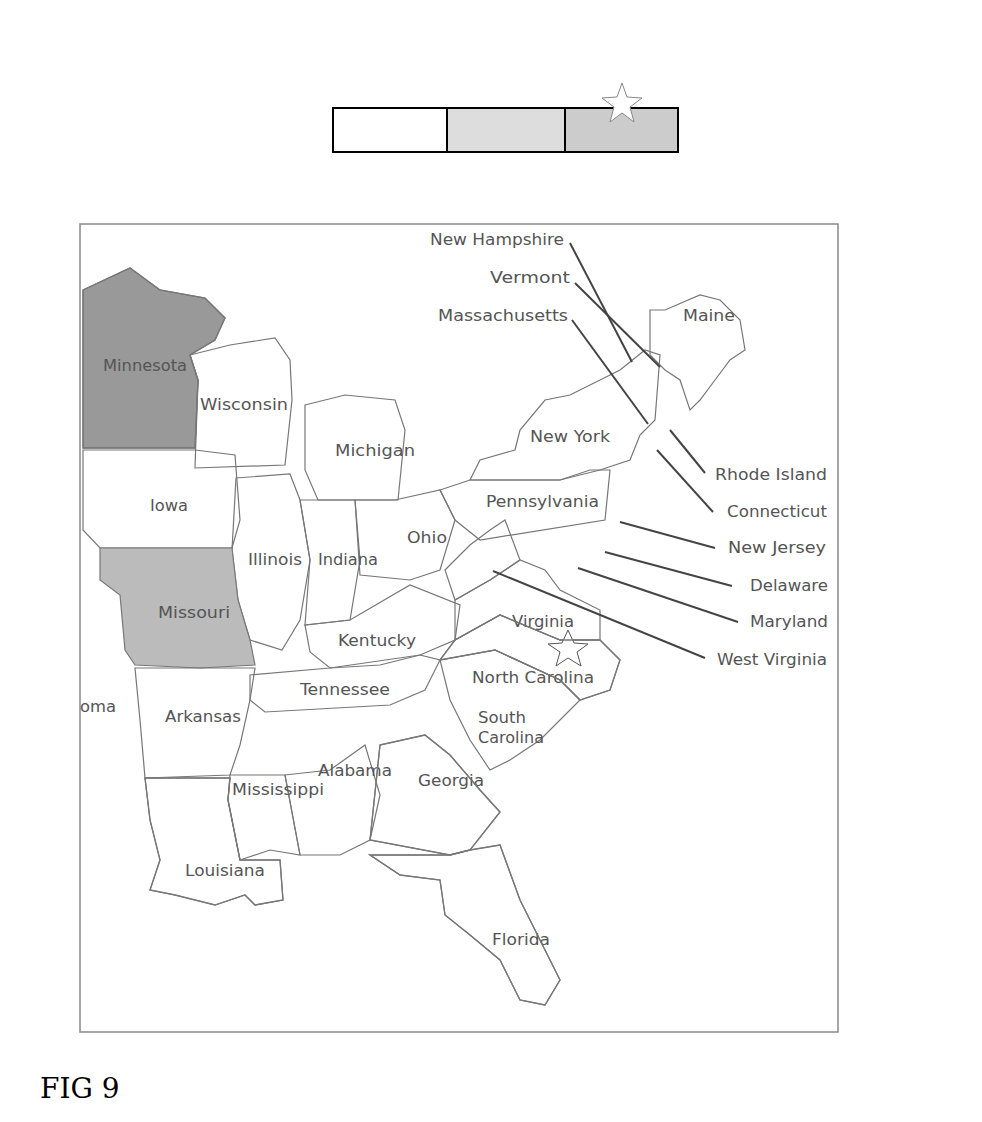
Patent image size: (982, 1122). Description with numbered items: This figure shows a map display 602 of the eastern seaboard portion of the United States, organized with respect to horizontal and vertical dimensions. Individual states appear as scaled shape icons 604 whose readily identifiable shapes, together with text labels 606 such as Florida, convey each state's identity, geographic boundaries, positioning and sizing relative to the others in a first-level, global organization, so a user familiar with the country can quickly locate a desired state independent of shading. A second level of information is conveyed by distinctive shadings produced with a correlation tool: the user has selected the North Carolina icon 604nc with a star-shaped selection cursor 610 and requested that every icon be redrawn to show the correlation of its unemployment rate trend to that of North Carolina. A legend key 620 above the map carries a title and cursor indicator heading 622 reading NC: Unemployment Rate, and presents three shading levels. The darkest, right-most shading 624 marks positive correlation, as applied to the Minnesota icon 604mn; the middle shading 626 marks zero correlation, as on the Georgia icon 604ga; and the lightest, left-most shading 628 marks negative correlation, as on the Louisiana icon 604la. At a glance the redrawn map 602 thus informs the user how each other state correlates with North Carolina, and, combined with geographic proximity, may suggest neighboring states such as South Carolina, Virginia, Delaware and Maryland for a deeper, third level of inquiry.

The map display 602 is at (158, 40).
The legend key 620 is at (305, 81).
The title and cursor indicator heading 622 is at (737, 72).
The darkest/right-most shading 624 is at (678, 130).
The middle shading 626 is at (455, 108).
The lightest/left-most shading 628 is at (333, 130).
The scaled shape icons 604 is at (555, 965).
The Minnesota icon 604mn is at (190, 445).
The North Carolina icon 604nc is at (573, 706).
The Georgia icon 604ga is at (495, 808).
The Louisiana icon 604la is at (253, 905).
The text labels 606 is at (493, 947).
The star-shaped selection cursor 610 is at (592, 644).